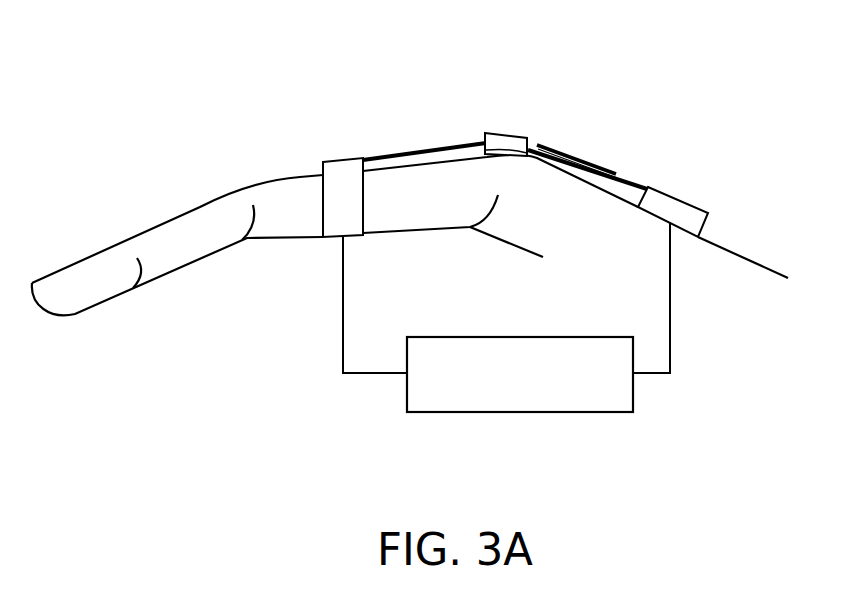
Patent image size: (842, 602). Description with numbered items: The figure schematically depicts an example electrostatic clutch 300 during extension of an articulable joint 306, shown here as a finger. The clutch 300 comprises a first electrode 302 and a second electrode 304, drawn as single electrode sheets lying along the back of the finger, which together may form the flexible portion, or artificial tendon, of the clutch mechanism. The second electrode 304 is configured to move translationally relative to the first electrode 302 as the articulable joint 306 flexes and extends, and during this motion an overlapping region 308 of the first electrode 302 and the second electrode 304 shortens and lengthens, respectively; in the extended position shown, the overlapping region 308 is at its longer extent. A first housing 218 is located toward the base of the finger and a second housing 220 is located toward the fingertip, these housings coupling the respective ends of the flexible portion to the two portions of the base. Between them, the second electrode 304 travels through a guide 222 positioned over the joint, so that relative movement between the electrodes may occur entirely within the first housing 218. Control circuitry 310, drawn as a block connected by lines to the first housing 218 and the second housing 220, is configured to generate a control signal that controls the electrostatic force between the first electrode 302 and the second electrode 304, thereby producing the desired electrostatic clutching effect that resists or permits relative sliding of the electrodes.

The electrostatic clutch 300 is at (624, 50).
The articulable joint 306 is at (473, 249).
The second housing 220 is at (325, 238).
The second electrode 304 is at (373, 157).
The guide 222 is at (497, 133).
The first electrode 302 is at (630, 172).
The overlapping region 308 is at (589, 150).
The first housing 218 is at (683, 198).
The control circuitry 310 is at (597, 395).